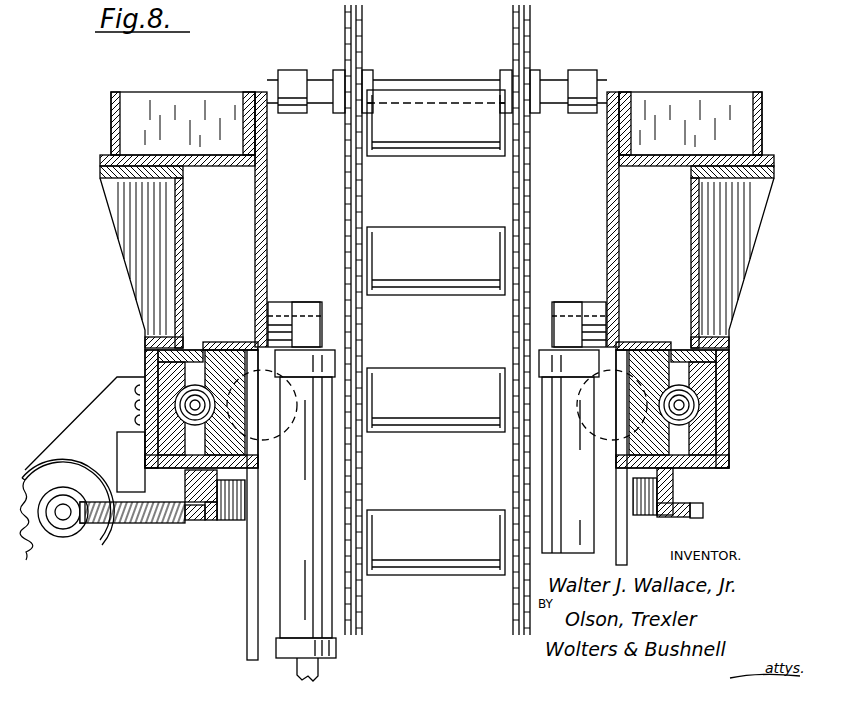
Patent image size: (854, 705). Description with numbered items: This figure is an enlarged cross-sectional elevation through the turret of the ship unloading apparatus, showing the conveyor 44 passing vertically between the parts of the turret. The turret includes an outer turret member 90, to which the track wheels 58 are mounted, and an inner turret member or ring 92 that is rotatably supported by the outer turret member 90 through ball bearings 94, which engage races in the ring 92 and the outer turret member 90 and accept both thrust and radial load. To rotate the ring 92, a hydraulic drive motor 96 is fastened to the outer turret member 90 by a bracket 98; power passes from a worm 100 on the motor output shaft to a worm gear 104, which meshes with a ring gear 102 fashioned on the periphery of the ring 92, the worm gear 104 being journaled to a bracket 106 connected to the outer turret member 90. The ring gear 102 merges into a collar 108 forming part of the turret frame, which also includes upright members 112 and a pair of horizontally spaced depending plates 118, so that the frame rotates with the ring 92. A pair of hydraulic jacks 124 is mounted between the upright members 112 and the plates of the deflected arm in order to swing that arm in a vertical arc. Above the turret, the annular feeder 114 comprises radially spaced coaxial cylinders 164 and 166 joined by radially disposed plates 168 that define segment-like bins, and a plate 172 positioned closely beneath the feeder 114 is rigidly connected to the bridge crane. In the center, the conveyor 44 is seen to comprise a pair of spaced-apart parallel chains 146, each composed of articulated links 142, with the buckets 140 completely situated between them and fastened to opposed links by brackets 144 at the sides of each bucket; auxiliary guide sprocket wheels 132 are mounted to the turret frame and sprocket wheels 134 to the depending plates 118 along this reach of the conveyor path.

The flexible endless conveyor 44 is at (535, 243).
The track wheels 58 is at (590, 440).
The outer turret member 90 is at (724, 428).
The inner turret member or ring 92 is at (678, 470).
The ball bearings 94 is at (162, 378).
The hydraulic drive motor 96 is at (70, 566).
The bracket 98 is at (96, 403).
The worm 100 is at (73, 523).
The ring gear 102 is at (203, 522).
The worm gear 104 is at (157, 525).
The bracket 106 is at (128, 448).
The collar 108 is at (212, 342).
The upright members 112 is at (268, 258).
The annular feeder 114 is at (110, 118).
The depending plates 118 is at (250, 632).
The hydraulic jacks 124 is at (437, 515).
The sprocket wheels 132 is at (510, 43).
The sprocket wheels 134 is at (512, 596).
The buckets 140 is at (436, 332).
The links 142 is at (345, 208).
The brackets 144 is at (500, 292).
The chains 146 is at (508, 193).
The cylinder 164 is at (115, 92).
The cylinder 166 is at (248, 92).
The plates 168 is at (208, 96).
The plate 172 is at (103, 160).